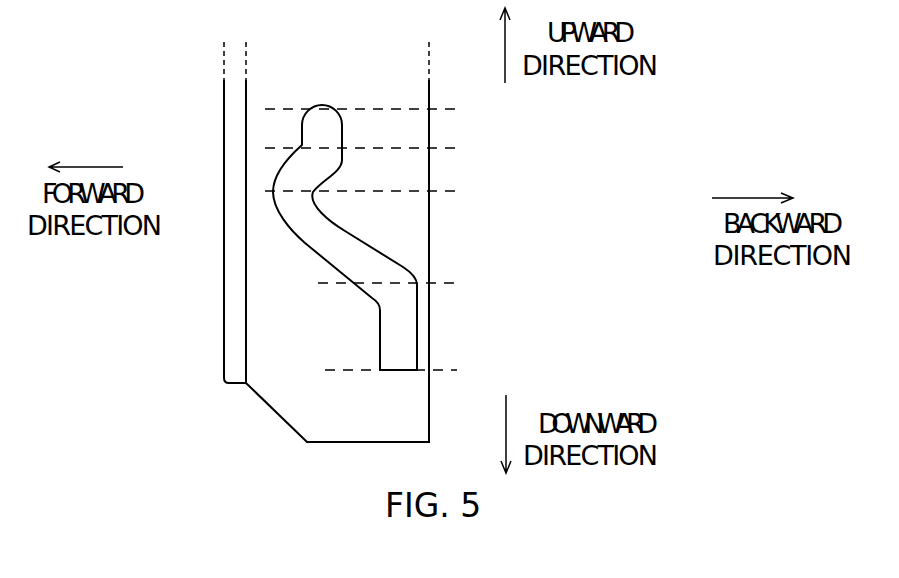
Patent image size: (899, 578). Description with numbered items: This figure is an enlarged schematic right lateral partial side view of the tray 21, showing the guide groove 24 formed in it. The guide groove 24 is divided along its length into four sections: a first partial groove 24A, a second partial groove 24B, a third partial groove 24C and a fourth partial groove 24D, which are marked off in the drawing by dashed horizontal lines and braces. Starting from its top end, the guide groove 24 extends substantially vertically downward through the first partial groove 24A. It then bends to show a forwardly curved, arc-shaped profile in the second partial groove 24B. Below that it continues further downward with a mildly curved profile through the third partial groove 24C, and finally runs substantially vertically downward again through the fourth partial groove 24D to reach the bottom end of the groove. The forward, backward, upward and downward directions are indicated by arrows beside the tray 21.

The tray 21 is at (268, 93).
The guide groove 24 is at (276, 244).
The first partial groove 24A is at (463, 109).
The second partial groove 24B is at (463, 148).
The third partial groove 24C is at (463, 191).
The fourth partial groove 24D is at (463, 283).